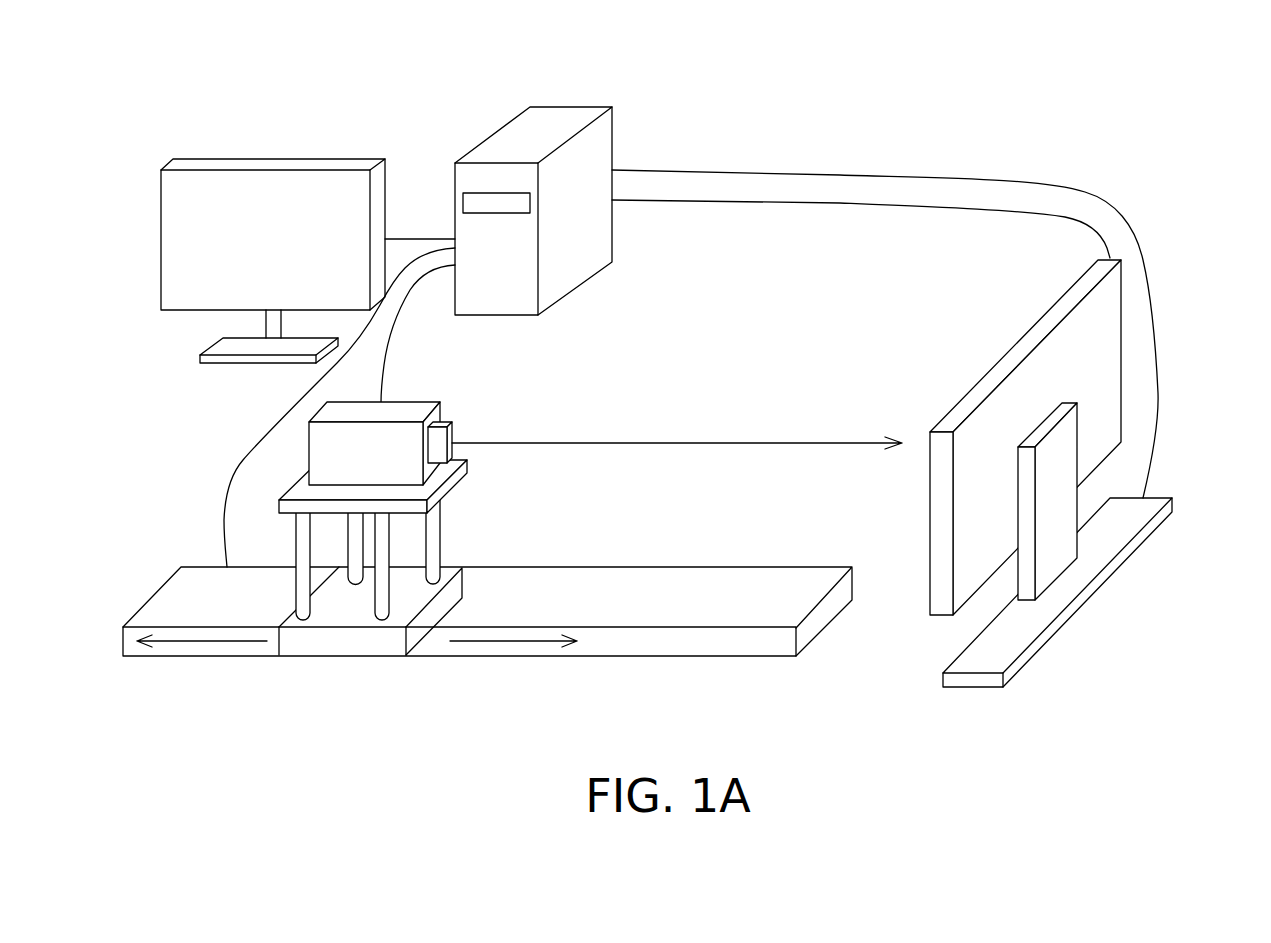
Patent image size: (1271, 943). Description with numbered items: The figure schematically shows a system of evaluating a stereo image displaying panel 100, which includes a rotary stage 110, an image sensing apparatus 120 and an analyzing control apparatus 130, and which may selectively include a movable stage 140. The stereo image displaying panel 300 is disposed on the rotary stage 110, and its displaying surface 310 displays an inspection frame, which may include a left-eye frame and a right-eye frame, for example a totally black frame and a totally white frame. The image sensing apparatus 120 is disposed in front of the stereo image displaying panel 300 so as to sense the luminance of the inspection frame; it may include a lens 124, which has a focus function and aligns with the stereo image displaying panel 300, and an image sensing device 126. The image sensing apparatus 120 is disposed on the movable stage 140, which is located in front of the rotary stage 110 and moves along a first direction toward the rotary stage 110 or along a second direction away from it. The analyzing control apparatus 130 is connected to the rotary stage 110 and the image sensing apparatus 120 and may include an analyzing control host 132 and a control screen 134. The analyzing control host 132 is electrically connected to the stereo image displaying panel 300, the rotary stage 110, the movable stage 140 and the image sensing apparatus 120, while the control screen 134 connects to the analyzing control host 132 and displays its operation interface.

The stereo image displaying panel evaluation system 100 is at (686, 375).
The rotary stage 110 is at (1122, 528).
The image sensing apparatus 120 is at (458, 414).
The lens 124 is at (486, 430).
The image sensing device 126 is at (405, 408).
The analyzing control apparatus 130 is at (386, 186).
The analyzing control host 132 is at (516, 192).
The control screen 134 is at (339, 180).
The movable stage 140 is at (730, 640).
The stereo image displaying panel 300 is at (938, 595).
The displaying surface 310 is at (1055, 292).